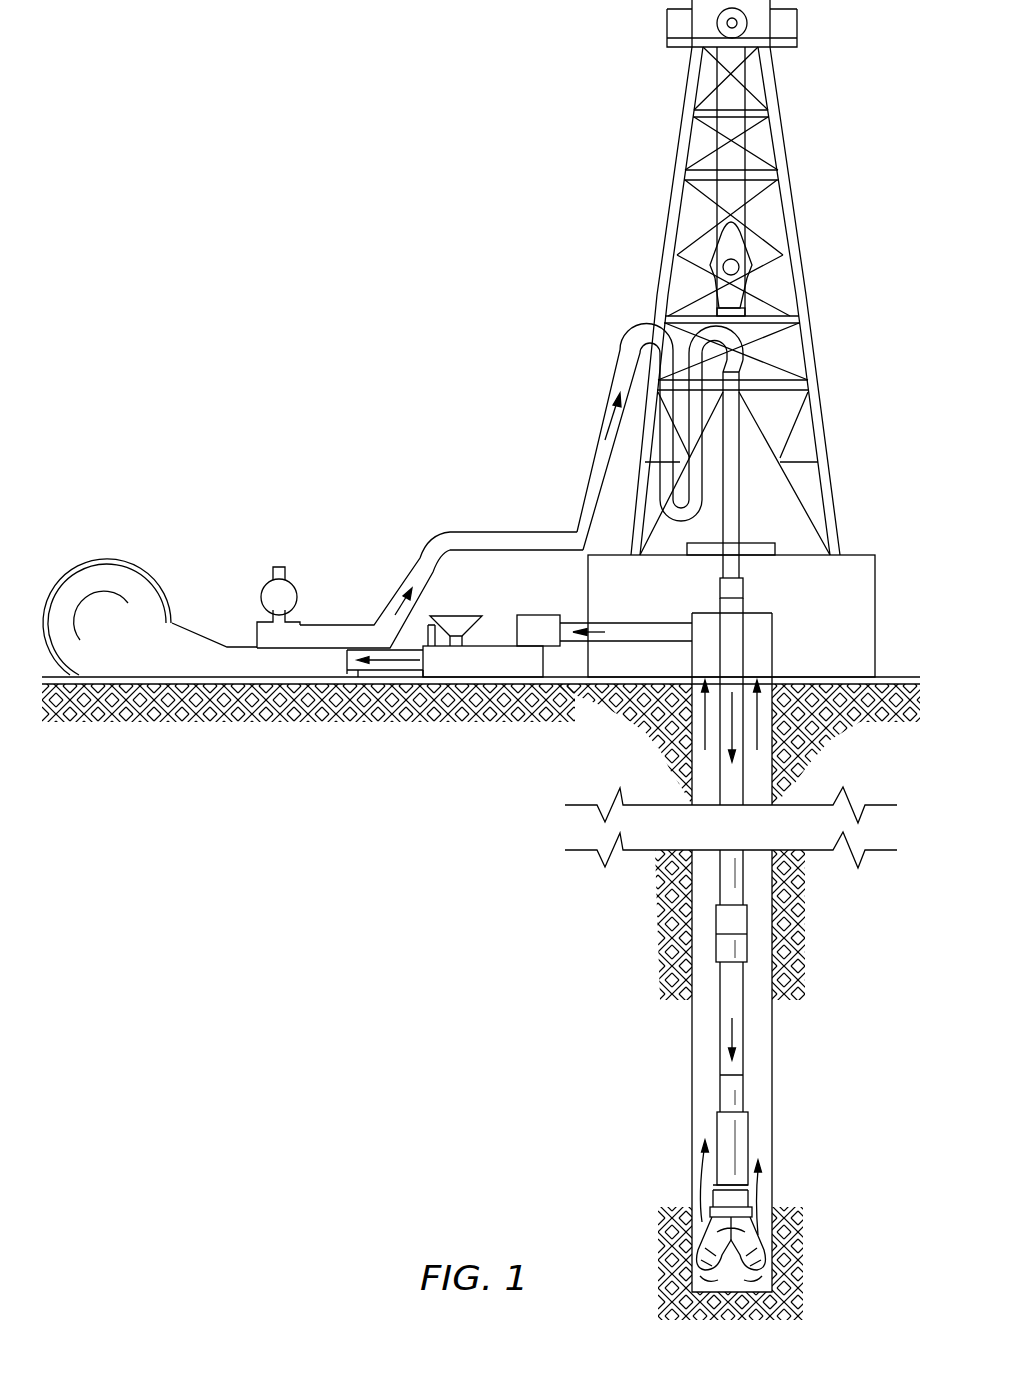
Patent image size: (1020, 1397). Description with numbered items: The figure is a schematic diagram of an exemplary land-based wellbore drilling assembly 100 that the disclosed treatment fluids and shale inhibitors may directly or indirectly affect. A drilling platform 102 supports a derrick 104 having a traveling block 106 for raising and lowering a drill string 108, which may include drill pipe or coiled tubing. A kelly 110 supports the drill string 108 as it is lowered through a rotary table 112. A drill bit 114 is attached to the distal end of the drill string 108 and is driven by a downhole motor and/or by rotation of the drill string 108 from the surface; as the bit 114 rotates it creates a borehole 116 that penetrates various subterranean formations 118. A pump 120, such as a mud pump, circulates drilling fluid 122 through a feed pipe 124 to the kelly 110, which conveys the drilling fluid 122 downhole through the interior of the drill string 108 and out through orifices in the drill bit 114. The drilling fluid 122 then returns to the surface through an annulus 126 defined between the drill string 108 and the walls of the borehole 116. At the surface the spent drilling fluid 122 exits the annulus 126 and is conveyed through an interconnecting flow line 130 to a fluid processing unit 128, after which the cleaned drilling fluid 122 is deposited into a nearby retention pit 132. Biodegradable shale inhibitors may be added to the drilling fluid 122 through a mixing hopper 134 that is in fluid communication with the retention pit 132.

The wellbore drilling assembly 100 is at (303, 166).
The drilling platform 102 is at (838, 626).
The derrick 104 is at (808, 324).
The traveling block 106 is at (752, 262).
The drill string 108 is at (722, 1050).
The kelly 110 is at (745, 492).
The rotary table 112 is at (778, 548).
The drill bit 114 is at (773, 1230).
The borehole 116 is at (766, 1022).
The subterranean formations 118 is at (614, 945).
The pump 120 is at (153, 573).
The drilling fluid 122 is at (387, 612).
The feed pipe 124 is at (512, 532).
The annulus 126 is at (757, 1093).
The fluid processing unit 128 is at (537, 613).
The flow line 130 is at (670, 620).
The retention pit 132 is at (495, 667).
The mixing hopper 134 is at (452, 618).